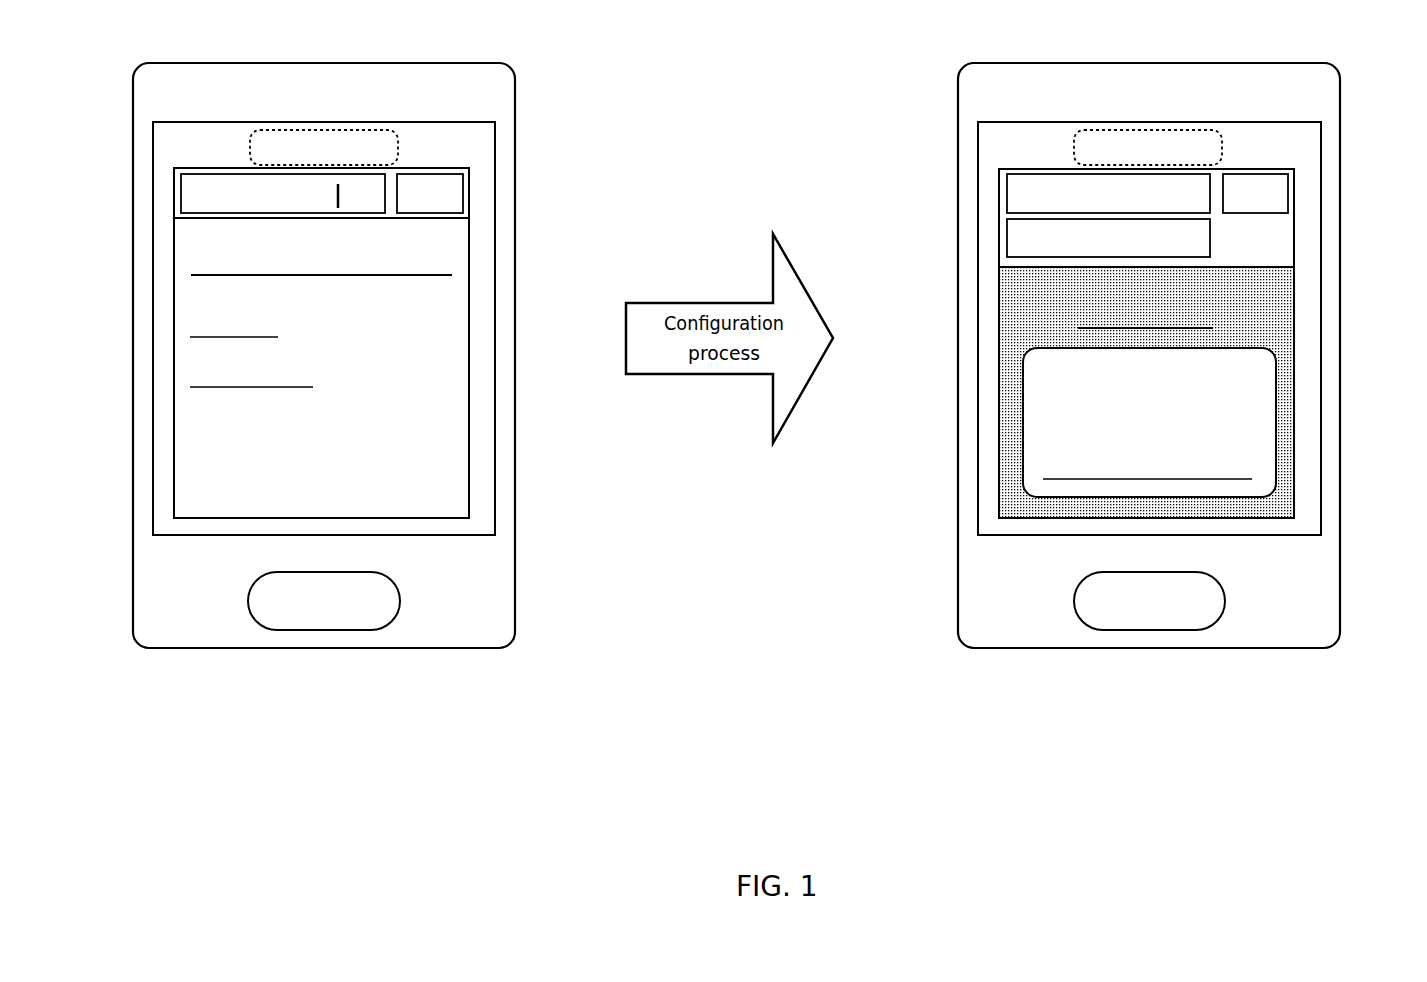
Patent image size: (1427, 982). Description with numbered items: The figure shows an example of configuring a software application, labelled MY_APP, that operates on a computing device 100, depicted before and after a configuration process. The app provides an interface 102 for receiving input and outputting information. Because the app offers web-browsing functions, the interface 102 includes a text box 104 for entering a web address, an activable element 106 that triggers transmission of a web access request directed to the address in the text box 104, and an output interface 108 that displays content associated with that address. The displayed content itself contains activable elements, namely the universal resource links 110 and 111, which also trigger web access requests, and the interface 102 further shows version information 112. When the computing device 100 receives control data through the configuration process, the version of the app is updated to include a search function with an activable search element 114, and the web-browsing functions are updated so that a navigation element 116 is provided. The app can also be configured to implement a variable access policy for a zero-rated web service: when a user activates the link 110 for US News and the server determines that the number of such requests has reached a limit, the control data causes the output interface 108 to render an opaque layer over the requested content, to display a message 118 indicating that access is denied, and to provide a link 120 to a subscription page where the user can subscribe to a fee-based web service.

The computing device 100 is at (504, 50).
The interface 102 is at (486, 107).
The text box 104 is at (181, 190).
The activable element 106 is at (463, 190).
The output interface 108 is at (469, 297).
The universal resource link 110 is at (190, 323).
The universal resource link 111 is at (188, 372).
The version information 112 is at (250, 148).
The activable search element 114 is at (1007, 237).
The navigation element 116 is at (1287, 240).
The message 118 is at (1023, 435).
The link 120 is at (1043, 473).